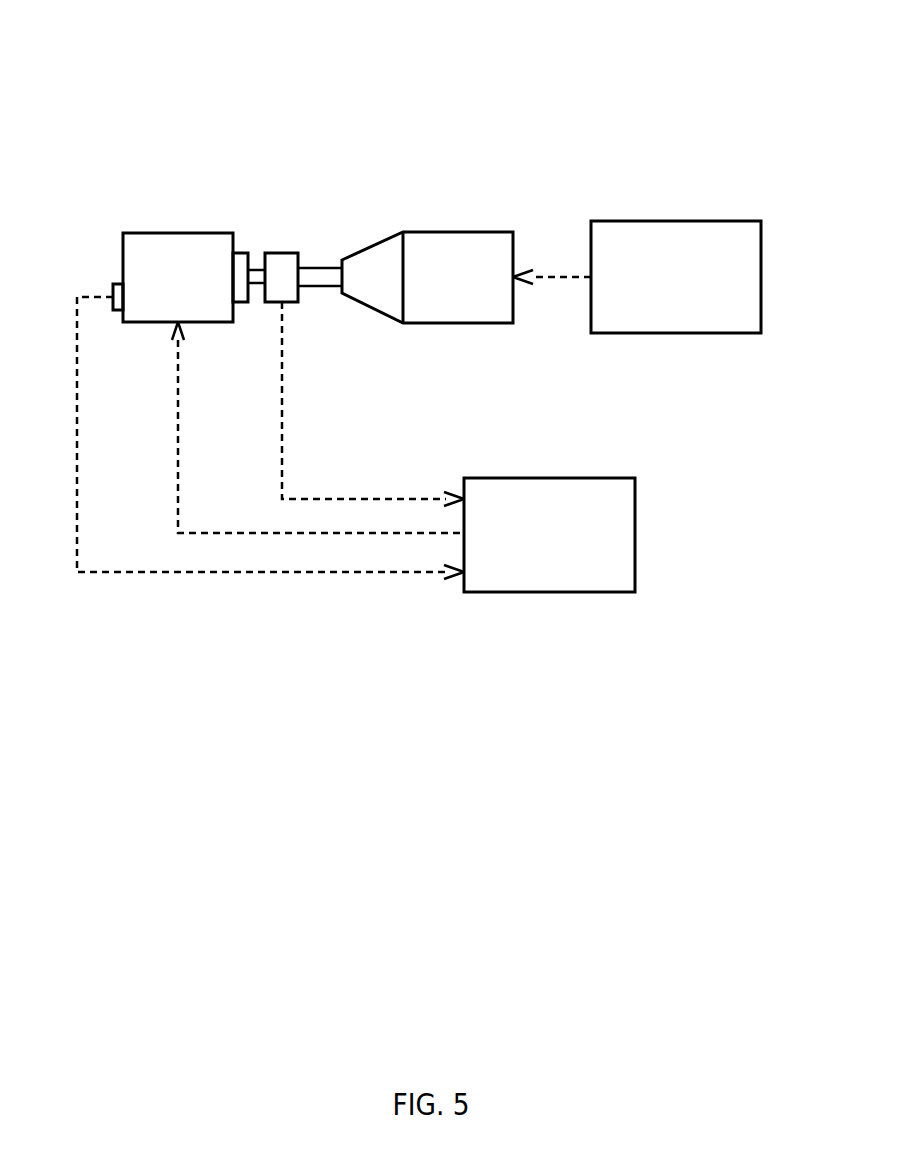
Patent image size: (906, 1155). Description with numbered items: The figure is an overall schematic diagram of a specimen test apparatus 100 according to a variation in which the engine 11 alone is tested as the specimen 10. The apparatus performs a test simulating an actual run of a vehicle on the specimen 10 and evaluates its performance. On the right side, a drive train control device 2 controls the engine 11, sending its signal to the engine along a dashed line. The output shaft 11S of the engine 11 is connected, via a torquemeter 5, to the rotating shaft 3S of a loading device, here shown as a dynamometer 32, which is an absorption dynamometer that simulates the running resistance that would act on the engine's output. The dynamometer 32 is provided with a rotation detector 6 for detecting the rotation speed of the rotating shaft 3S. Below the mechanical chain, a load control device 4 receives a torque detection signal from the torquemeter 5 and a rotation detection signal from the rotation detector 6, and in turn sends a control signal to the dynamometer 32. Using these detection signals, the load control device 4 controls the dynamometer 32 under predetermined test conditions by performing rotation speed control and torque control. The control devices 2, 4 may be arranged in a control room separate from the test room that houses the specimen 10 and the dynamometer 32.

The specimen test apparatus 100 is at (247, 127).
The rear wheel side dynamometer 32 is at (178, 233).
The rotation detector 6 is at (112, 287).
The rotating shaft 3S is at (257, 283).
The torquemeter 5 is at (281, 253).
The output shaft 11S is at (319, 287).
The specimen 10 is at (427, 247).
The engine 11 is at (457, 232).
The drive train control device 2 is at (676, 221).
The load control device 4 is at (550, 592).